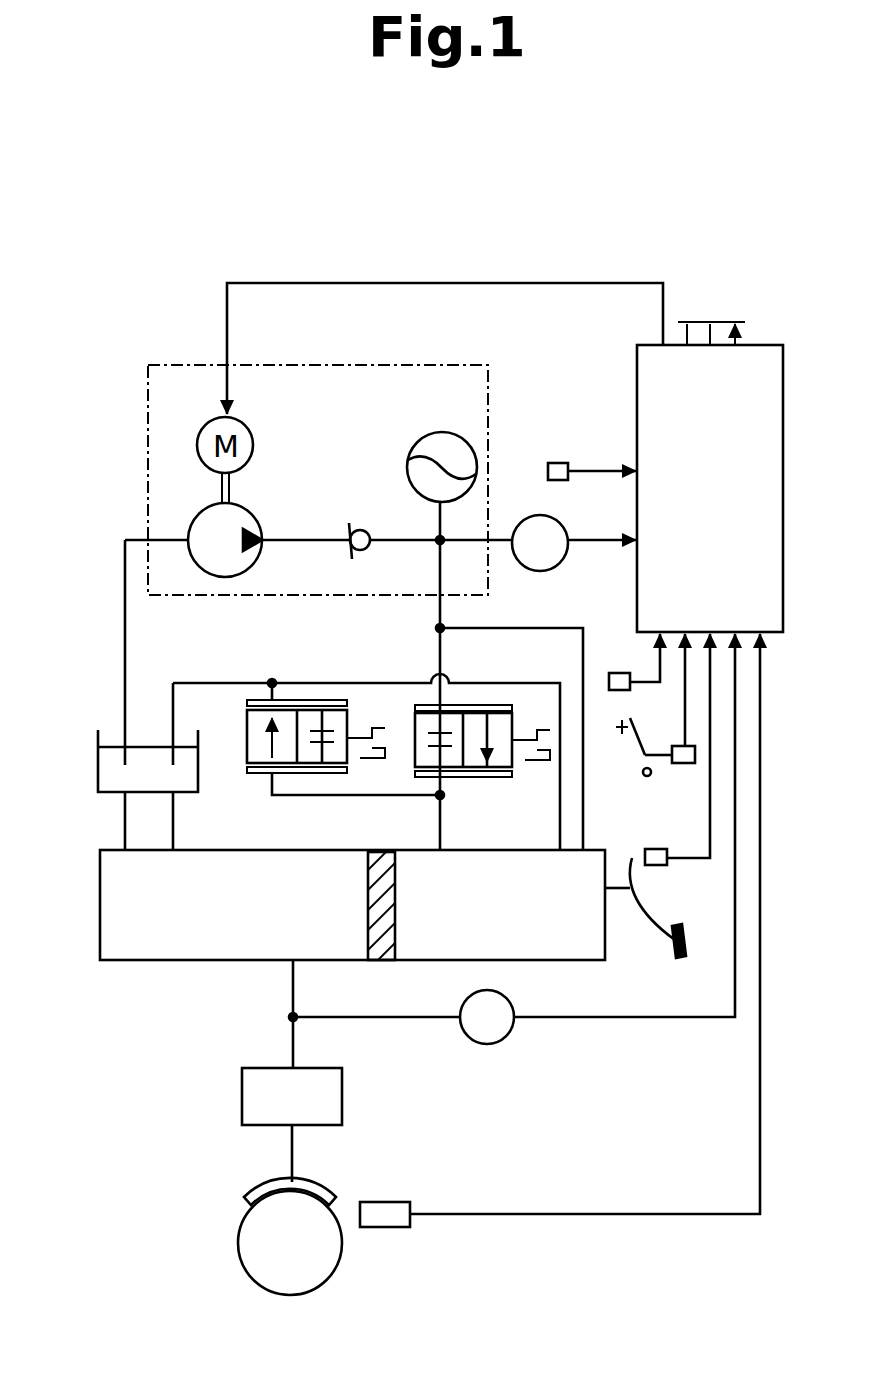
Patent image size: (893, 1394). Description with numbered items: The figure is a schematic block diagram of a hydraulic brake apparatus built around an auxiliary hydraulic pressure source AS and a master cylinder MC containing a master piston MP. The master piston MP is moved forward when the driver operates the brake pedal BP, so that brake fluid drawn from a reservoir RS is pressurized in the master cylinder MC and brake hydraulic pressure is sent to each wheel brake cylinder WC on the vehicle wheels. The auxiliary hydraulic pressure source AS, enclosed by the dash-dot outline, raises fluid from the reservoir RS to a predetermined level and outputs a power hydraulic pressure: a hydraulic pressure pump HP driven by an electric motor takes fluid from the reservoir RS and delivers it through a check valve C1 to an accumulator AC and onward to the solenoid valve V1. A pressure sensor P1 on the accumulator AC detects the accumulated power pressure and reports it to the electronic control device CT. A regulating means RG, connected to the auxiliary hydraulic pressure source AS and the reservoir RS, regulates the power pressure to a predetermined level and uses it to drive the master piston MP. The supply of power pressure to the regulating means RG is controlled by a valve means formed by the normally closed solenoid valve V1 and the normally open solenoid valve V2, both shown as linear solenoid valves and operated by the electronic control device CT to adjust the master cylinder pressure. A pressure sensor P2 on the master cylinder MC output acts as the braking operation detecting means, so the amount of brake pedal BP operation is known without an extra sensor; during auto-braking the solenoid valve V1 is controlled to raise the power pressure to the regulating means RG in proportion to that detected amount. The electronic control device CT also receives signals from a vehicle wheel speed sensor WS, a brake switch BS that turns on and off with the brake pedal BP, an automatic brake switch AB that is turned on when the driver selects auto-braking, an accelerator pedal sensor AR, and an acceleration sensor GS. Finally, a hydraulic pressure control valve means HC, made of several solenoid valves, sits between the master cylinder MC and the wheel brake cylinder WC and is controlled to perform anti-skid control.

The auxiliary hydraulic pressure source AS is at (395, 362).
The hydraulic pressure pump HP is at (205, 512).
The check valve C1 is at (355, 528).
The accumulator AC is at (445, 433).
The pressure sensor P1 is at (540, 543).
The normally open type solenoid valve V2 is at (262, 775).
The normally closed type solenoid valve V1 is at (478, 778).
The reservoir RS is at (92, 757).
The master cylinder MC is at (150, 962).
The master piston MP is at (380, 962).
The regulating means RG is at (540, 962).
The brake pedal BP is at (645, 918).
The brake switch BS is at (655, 849).
The automatic brake switch AB is at (621, 673).
The accelerator pedal sensor AR is at (684, 763).
The pressure sensor P2 is at (512, 839).
The hydraulic pressure control valve means HC is at (292, 1096).
The wheel brake cylinder WC is at (252, 1182).
The vehicle wheel speed sensor WS is at (385, 1202).
The acceleration sensor GS is at (557, 463).
The electronic control device CT is at (637, 400).